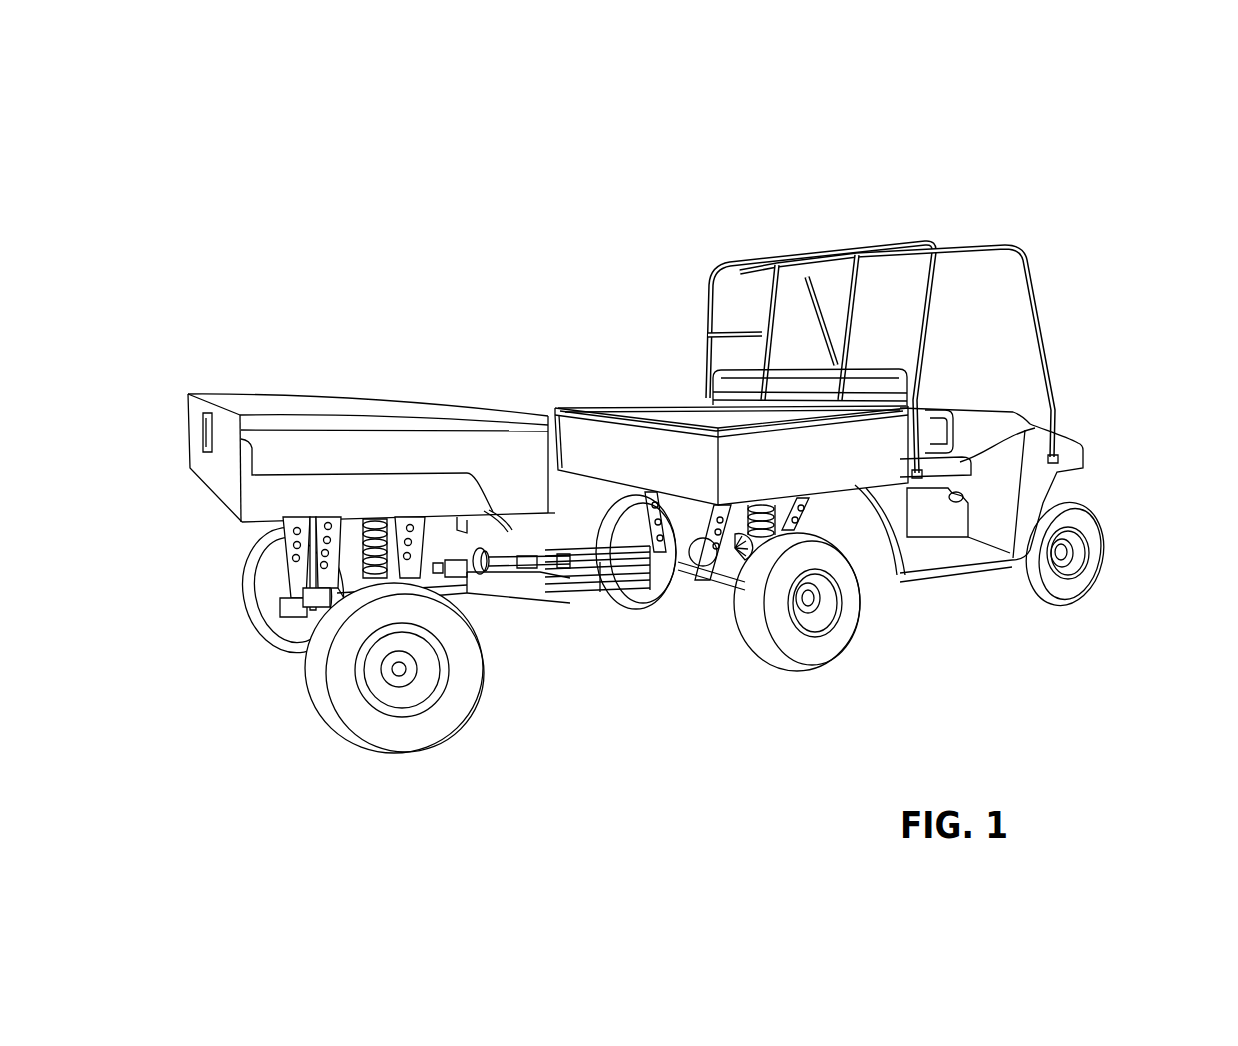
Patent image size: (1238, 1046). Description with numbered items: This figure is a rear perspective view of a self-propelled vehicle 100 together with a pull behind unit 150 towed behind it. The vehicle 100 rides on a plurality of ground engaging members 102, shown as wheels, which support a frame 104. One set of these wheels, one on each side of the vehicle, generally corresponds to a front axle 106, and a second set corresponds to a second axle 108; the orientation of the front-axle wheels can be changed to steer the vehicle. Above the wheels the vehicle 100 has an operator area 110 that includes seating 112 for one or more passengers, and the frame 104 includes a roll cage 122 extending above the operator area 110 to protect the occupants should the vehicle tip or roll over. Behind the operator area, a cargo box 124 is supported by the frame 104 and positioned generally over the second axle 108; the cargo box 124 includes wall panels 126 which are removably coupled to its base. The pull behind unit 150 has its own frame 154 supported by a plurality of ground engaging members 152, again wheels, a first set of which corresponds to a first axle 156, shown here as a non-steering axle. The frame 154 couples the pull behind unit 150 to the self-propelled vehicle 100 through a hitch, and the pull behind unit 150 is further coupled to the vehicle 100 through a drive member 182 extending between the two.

The self-propelled vehicle 100 is at (957, 200).
The ground engaging members 102 is at (640, 612).
The frame 104 is at (894, 599).
The front axle 106 is at (1080, 630).
The second axle 108 is at (834, 702).
The operator area 110 is at (1032, 385).
The seating 112 is at (1035, 428).
The roll cage 122 is at (1035, 240).
The cargo box 124 is at (603, 394).
The wall panels 126 is at (683, 413).
The pull behind unit 150 is at (348, 392).
The ground engaging members 152 is at (245, 650).
The frame 154 is at (488, 628).
The first axle 156 is at (379, 787).
The drive member 182 is at (567, 545).